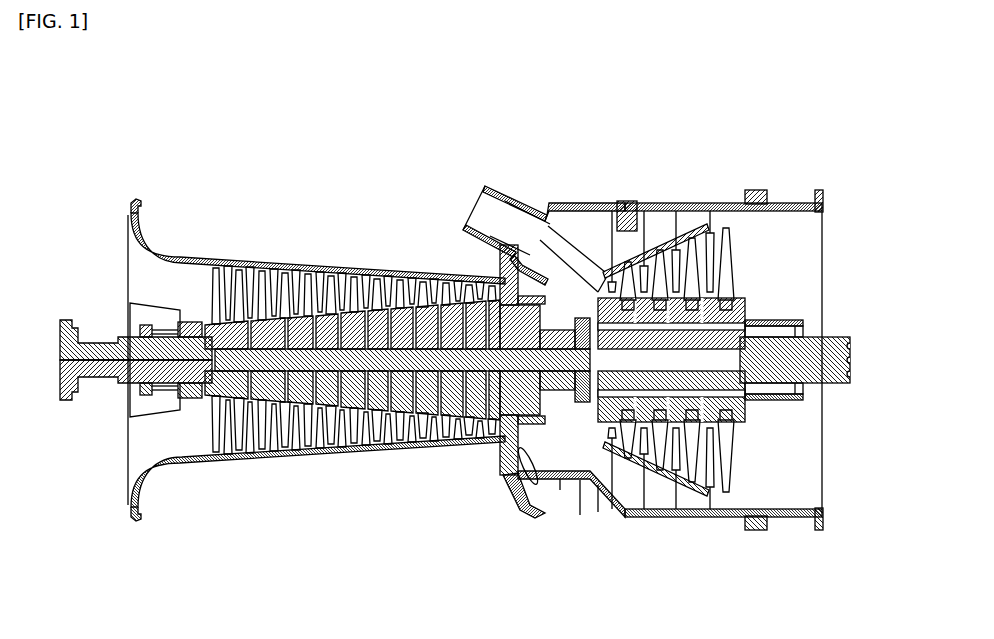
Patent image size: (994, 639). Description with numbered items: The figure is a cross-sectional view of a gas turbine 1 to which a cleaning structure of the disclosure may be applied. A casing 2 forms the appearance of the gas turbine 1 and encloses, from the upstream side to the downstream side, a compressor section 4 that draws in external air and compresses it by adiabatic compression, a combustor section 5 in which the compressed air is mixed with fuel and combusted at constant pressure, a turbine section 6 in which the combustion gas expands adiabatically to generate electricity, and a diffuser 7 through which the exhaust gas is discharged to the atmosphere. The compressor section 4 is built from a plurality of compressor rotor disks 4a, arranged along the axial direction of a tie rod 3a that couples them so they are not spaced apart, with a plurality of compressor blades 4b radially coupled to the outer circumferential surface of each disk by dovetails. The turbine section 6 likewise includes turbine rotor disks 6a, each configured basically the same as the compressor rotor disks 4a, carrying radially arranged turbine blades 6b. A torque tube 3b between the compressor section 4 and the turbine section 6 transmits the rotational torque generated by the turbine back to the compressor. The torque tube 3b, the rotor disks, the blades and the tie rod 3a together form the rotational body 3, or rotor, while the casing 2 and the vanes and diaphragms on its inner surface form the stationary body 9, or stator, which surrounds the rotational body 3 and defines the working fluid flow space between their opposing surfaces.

The gas turbine 1 is at (118, 100).
The casing 2 is at (165, 262).
The rotational body 3 is at (50, 331).
The tie rod 3a is at (182, 420).
The torque tube 3b is at (523, 472).
The compressor section 4 is at (397, 350).
The compressor rotor disk 4a is at (250, 450).
The compressor blade 4b is at (280, 455).
The combustor section 5 is at (504, 183).
The turbine section 6 is at (710, 342).
The turbine rotor disk 6a is at (690, 450).
The turbine blade 6b is at (708, 453).
The diffuser 7 is at (828, 219).
The stationary body 9 is at (125, 192).